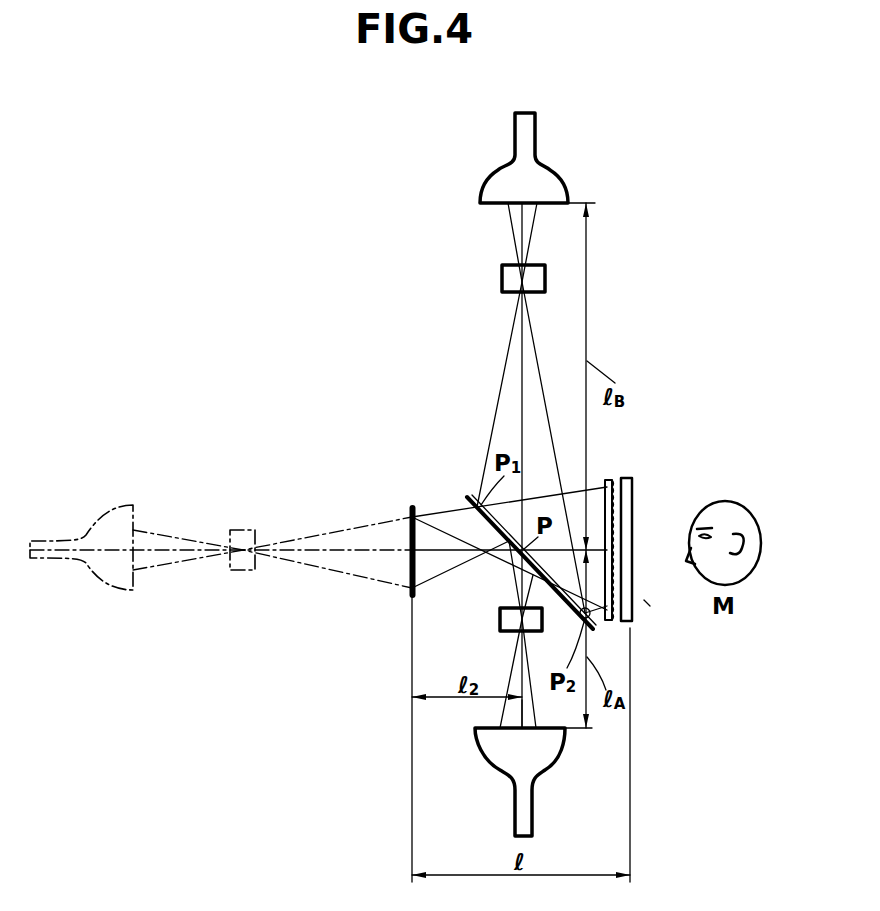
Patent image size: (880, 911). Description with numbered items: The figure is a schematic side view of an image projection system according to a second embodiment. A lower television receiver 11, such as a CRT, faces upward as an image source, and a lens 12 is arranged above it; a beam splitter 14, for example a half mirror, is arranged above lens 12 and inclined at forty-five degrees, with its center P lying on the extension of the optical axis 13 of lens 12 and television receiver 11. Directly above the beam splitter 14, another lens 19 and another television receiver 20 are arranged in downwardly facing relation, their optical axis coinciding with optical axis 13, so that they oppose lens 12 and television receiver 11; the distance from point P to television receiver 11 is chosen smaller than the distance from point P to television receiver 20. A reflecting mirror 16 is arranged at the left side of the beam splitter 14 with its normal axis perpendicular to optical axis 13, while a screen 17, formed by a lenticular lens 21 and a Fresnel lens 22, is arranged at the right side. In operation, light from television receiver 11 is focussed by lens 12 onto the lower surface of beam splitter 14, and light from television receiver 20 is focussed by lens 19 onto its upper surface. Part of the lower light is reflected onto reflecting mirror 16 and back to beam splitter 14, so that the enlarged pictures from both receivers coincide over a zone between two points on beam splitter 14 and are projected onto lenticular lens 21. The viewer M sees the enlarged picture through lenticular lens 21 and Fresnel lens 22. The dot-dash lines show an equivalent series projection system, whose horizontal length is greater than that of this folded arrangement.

The television receiver 11 is at (493, 748).
The lens 12 is at (503, 617).
The optical axis 13 is at (525, 715).
The beam splitter 14 is at (476, 509).
The reflecting mirror 16 is at (409, 580).
The screen 17 is at (646, 602).
The lens 19 is at (507, 273).
The television receiver 20 is at (548, 187).
The lenticular lens 21 is at (610, 480).
The Fresnel lens 22 is at (628, 484).